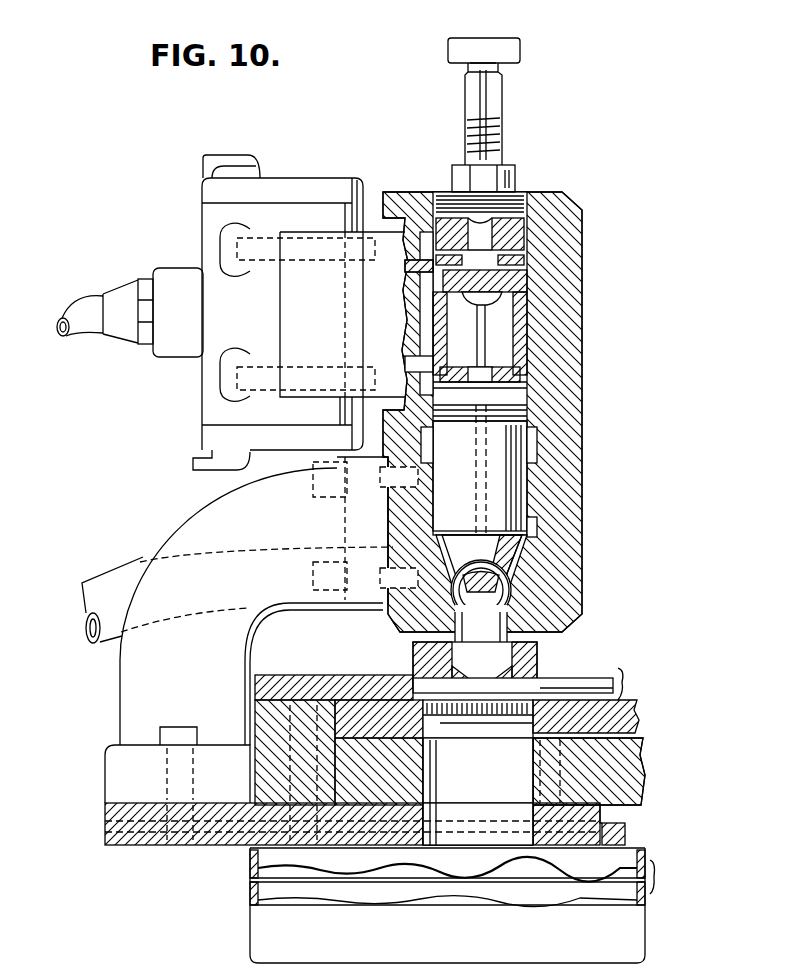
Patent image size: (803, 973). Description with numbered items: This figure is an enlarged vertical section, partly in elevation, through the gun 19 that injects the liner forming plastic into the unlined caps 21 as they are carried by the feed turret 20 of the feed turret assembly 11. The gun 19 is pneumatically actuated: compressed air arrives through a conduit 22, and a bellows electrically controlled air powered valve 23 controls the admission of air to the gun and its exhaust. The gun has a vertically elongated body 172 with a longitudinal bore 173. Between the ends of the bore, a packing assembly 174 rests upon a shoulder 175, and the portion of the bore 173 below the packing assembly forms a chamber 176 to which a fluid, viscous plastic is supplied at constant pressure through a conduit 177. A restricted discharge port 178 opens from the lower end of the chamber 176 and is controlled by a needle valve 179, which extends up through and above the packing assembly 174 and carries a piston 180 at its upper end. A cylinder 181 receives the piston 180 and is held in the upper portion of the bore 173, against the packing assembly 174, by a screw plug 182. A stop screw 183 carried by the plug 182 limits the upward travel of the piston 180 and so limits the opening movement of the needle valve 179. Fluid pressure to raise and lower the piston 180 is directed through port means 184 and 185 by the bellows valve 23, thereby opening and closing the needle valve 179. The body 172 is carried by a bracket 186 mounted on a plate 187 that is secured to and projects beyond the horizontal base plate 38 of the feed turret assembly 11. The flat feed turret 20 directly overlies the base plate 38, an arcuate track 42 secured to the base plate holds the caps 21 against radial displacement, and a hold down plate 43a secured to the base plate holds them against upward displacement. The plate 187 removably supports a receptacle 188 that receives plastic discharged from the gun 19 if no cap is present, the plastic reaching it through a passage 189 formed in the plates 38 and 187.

The feed turret assembly 11 is at (661, 769).
The gun 19 is at (598, 493).
The feed turret 20 is at (642, 716).
The unlined caps 21 is at (493, 722).
The conduit 22 is at (90, 280).
The bellows electrically controlled air powered valve 23 is at (195, 232).
The base plate 38 is at (627, 787).
The arcuate track 42 is at (383, 720).
The horizontal plate 43a is at (350, 678).
The body 172 is at (580, 232).
The longitudinal bore 173 is at (527, 374).
The packing assembly 174 is at (510, 453).
The shoulder 175 is at (517, 540).
The chamber 176 is at (507, 598).
The conduit 177 is at (127, 572).
The restricted discharge port 178 is at (477, 691).
The needle valve 179 is at (482, 318).
The piston 180 is at (530, 292).
The cylinder 181 is at (523, 337).
The screw plug 182 is at (520, 190).
The stop screw 183 is at (502, 105).
The port means 184 is at (398, 358).
The port means 185 is at (403, 265).
The bracket 186 is at (130, 703).
The plate 187 is at (207, 835).
The receptacle 188 is at (258, 928).
The passage 189 is at (497, 792).